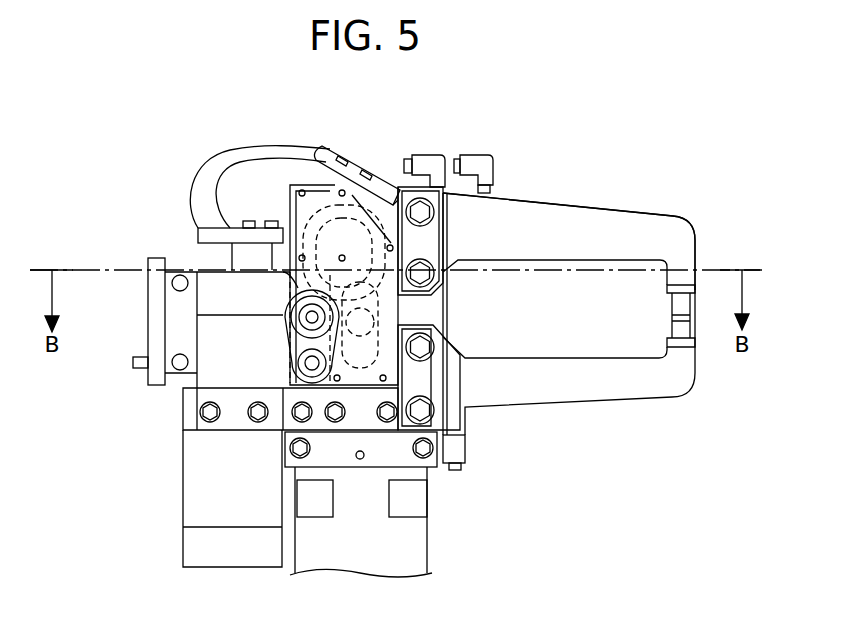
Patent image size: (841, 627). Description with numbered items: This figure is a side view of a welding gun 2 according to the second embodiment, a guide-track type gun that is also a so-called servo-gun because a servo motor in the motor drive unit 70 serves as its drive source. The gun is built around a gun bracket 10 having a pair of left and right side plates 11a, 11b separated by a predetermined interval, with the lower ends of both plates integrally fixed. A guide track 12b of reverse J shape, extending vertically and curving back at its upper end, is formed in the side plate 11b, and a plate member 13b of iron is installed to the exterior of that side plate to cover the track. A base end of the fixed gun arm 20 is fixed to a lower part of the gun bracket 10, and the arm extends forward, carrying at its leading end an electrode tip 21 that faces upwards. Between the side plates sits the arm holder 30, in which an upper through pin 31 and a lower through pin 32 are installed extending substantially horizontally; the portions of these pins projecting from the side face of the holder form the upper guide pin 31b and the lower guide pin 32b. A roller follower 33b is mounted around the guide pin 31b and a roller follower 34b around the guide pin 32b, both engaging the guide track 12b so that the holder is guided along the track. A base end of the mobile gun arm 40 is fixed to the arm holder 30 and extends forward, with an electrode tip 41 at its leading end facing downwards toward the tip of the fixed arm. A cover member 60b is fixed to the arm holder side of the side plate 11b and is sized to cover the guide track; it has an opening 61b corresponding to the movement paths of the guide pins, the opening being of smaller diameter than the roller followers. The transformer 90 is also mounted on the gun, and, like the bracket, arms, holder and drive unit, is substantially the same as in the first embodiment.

The welding gun 2 is at (688, 127).
The gun bracket 10 is at (256, 166).
The side plate 11a is at (229, 170).
The side plate 11b is at (229, 170).
The guide track 12b is at (318, 212).
The plate member 13b is at (290, 190).
The fixed gun arm 20 is at (618, 390).
The electrode tip 21 is at (682, 333).
The arm holder 30 is at (292, 300).
The through pin 31 is at (415, 228).
The guide pin 31b is at (457, 273).
The through pin 32 is at (445, 336).
The guide pin 32b is at (452, 327).
The roller follower 33b is at (388, 218).
The roller follower 34b is at (362, 320).
The mobile gun arm 40 is at (618, 217).
The electrode tip 41 is at (682, 303).
The cover member 60b is at (333, 182).
The opening 61b is at (352, 246).
The motor drive unit 70 is at (448, 533).
The transformer 90 is at (198, 462).